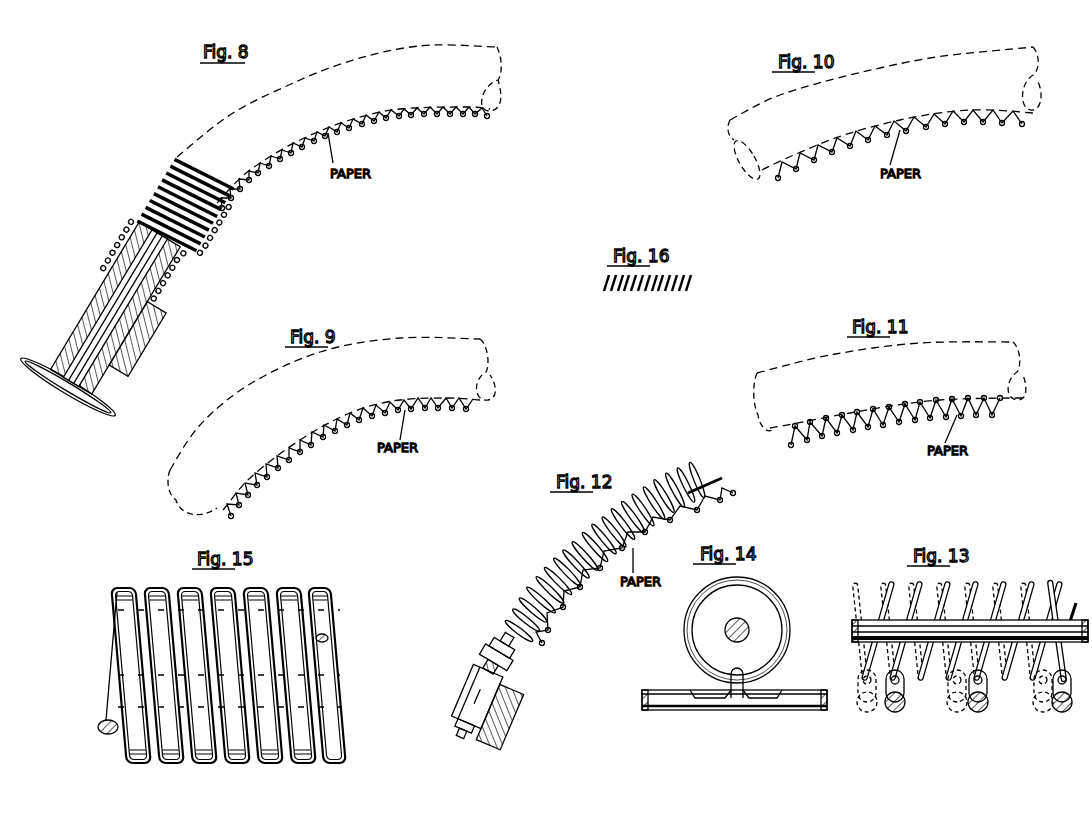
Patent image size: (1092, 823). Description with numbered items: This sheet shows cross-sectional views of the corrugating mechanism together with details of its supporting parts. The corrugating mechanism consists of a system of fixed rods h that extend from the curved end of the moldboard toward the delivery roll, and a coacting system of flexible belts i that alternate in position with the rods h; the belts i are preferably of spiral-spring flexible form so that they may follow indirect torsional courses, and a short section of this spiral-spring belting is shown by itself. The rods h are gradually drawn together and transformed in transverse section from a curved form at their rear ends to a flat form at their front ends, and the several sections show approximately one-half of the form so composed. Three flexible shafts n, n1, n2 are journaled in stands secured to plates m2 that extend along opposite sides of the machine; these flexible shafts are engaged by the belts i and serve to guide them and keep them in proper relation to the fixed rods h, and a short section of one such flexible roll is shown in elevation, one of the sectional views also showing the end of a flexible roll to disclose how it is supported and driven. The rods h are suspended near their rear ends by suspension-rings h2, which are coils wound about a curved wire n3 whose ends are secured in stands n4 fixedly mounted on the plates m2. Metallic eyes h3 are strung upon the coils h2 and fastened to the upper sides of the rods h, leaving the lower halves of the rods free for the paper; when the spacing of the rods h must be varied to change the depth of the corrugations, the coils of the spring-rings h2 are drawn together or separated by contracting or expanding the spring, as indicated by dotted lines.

In FIG. 8, the flexible shaft n is at (339, 124).
In FIG. 15, the flexible shaft n is at (147, 624).
In FIG. 9, the flexible shaft n1 is at (331, 425).
In FIG. 10, the flexible shaft n2 is at (884, 115).
In FIG. 12, the curved wire n3 is at (720, 479).
In FIG. 14, the curved wire n3 is at (748, 625).
In FIG. 12, the stand n4 is at (475, 699).
In FIG. 8, the plate m2 is at (133, 352).
In FIG. 12, the plate m2 is at (503, 708).
In FIG. 8, the fixed rod h is at (268, 167).
In FIG. 9, the fixed rod h is at (310, 447).
In FIG. 10, the fixed rod h is at (803, 170).
In FIG. 11, the fixed rod h is at (850, 437).
In FIG. 14, the fixed rod h is at (660, 705).
In FIG. 13, the fixed rod h is at (893, 713).
In FIG. 12, the suspension-ring h2 is at (545, 577).
In FIG. 14, the suspension-ring h2 is at (691, 636).
In FIG. 13, the suspension-ring h2 is at (982, 655).
In FIG. 14, the metallic eye h3 is at (730, 702).
In FIG. 13, the metallic eye h3 is at (903, 690).
In FIG. 8, the flexible belt i is at (250, 179).
In FIG. 9, the flexible belt i is at (292, 448).
In FIG. 10, the flexible belt i is at (812, 162).
In FIG. 11, the flexible belt i is at (873, 426).